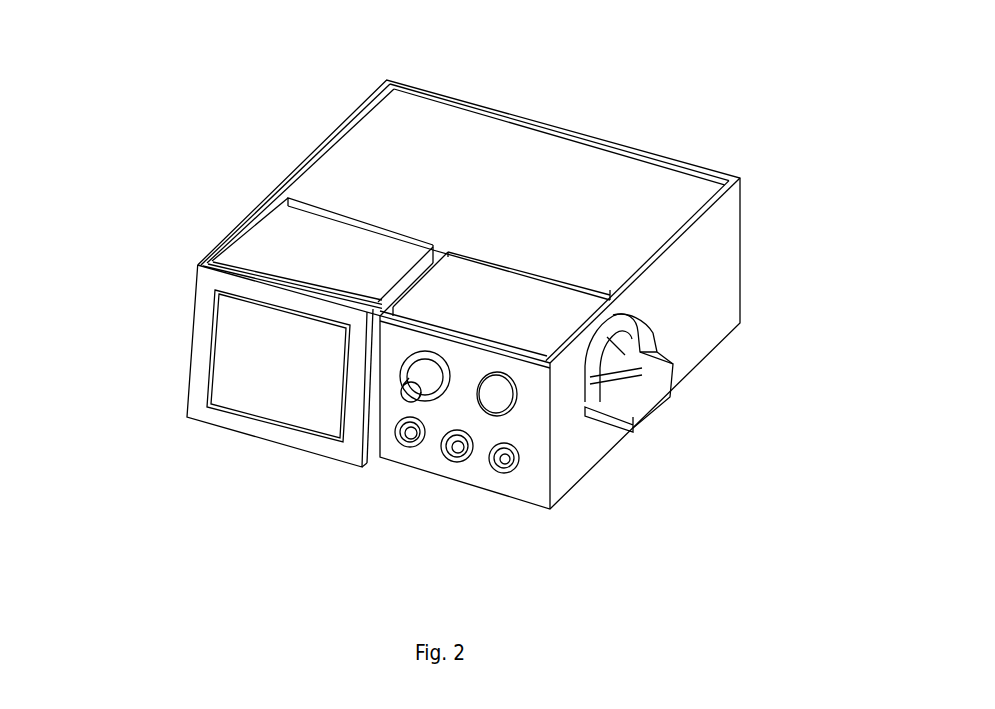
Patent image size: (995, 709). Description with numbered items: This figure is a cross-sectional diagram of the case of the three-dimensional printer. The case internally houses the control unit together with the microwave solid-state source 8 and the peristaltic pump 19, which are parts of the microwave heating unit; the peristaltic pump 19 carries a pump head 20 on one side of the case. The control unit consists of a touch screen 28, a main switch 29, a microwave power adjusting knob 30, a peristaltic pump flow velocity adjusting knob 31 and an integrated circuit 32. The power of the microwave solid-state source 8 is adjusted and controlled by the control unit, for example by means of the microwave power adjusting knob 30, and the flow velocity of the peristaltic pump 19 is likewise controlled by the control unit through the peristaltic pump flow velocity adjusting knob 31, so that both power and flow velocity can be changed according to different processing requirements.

The microwave solid-state source 8 is at (436, 171).
The peristaltic pump 19 is at (514, 308).
The pump head 20 is at (656, 367).
The touch screen 28 is at (184, 301).
The main switch 29 is at (411, 446).
The microwave power adjusting knob 30 is at (327, 422).
The peristaltic pump flow velocity adjusting knob 31 is at (457, 489).
The integrated circuit 32 is at (260, 186).